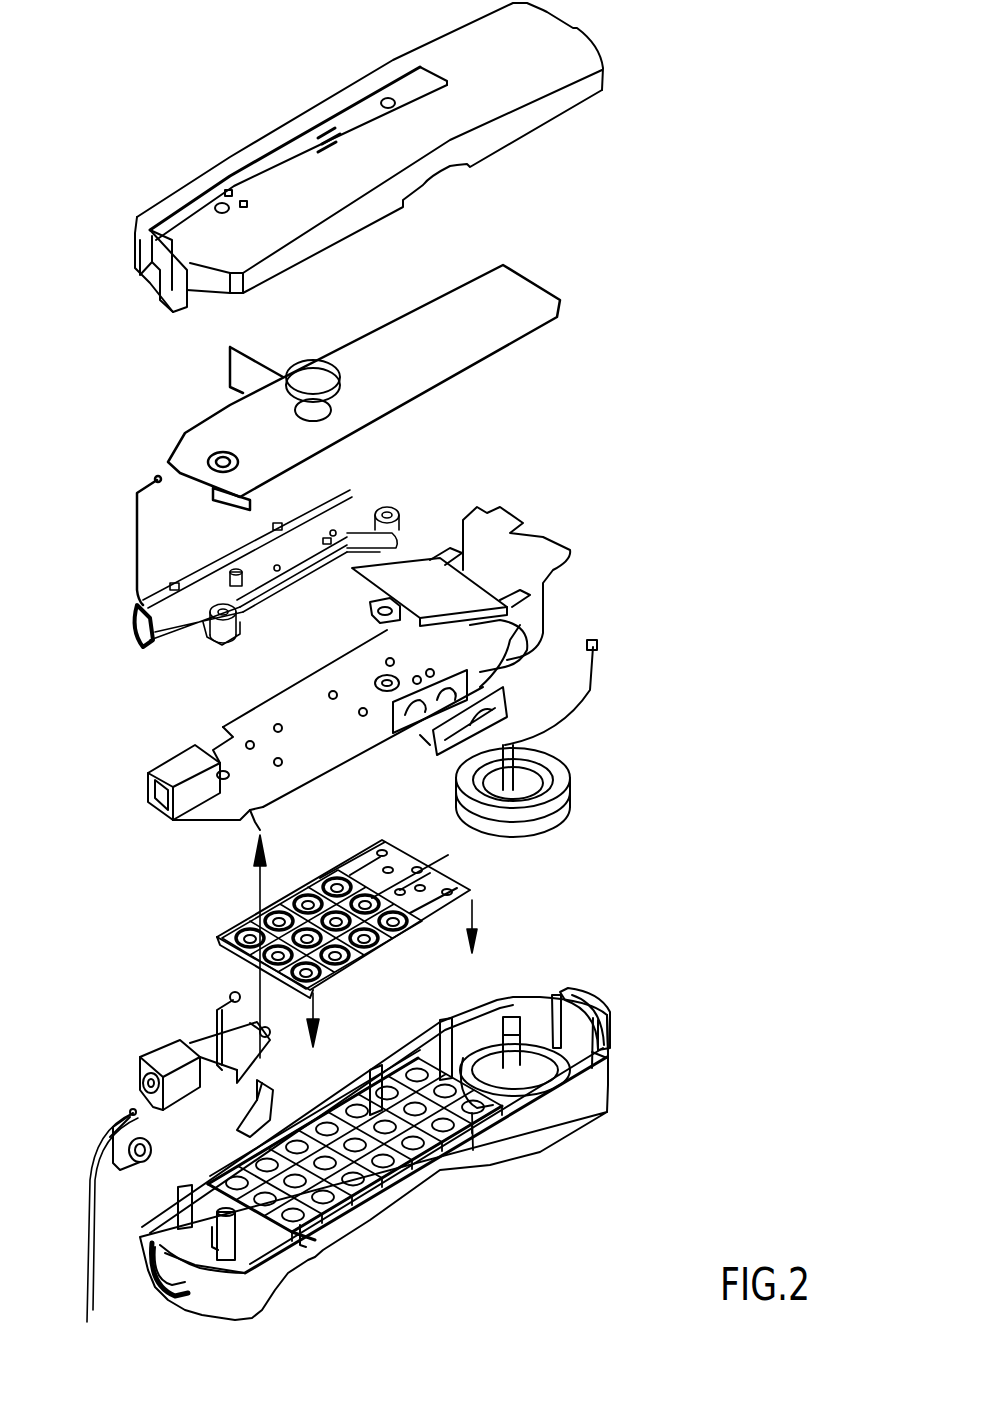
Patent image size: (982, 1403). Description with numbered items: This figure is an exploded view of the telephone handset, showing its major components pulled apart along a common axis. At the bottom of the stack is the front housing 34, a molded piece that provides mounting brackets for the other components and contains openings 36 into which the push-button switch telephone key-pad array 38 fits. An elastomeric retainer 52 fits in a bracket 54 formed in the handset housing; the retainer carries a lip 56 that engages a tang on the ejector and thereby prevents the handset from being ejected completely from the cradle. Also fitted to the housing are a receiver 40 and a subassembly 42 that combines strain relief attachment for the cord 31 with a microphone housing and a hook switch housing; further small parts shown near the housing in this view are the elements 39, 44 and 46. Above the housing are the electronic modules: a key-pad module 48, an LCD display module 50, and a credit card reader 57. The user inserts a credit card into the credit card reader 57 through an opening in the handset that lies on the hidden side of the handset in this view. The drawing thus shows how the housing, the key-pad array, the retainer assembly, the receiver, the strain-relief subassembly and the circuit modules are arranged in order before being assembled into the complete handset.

The cord 31 is at (93, 1308).
The front housing 34 is at (512, 1145).
The openings 36 is at (383, 1197).
The telephone key-pad array 38 is at (385, 947).
The cord exit lug 39 is at (162, 1297).
The receiver 40 is at (572, 803).
The subassembly 42 is at (143, 1028).
The grommet 44 is at (150, 1148).
The hook bracket 46 is at (270, 1087).
The key-pad module 48 is at (243, 703).
The LCD display module 50 is at (425, 568).
The elastomeric retainer 52 is at (597, 1000).
The bracket 54 is at (310, 377).
The lip 56 is at (613, 1027).
The credit card reader 57 is at (387, 515).